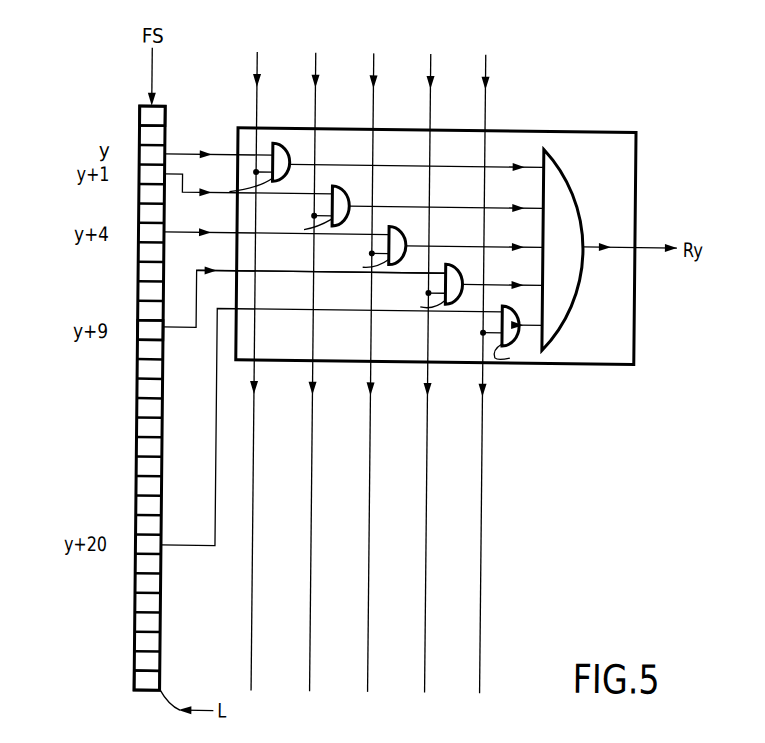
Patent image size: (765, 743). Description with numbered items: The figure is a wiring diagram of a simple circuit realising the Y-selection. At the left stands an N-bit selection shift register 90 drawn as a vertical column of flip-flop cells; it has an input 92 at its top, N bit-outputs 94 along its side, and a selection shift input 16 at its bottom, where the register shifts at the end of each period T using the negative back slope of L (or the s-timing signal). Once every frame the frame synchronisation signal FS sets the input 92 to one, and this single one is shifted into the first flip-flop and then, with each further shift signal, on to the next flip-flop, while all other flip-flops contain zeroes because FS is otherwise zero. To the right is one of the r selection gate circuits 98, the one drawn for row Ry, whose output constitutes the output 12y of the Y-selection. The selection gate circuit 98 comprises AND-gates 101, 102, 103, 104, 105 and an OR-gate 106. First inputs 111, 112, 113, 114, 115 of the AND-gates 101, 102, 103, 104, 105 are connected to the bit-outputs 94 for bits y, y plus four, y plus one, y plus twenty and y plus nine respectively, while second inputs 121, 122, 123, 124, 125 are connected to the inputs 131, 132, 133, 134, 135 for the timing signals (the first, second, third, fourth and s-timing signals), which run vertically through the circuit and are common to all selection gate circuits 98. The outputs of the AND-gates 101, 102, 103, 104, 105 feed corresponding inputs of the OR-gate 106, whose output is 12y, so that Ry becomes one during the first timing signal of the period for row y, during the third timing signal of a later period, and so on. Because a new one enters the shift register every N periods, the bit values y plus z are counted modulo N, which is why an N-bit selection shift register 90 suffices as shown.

The selection shift register 90 is at (137, 582).
The input 92 is at (157, 108).
The selection shift input 16 is at (166, 692).
The bit-outputs 94 is at (166, 332).
The selection gate circuit 98 is at (609, 362).
The AND-gate 101 is at (284, 171).
The AND-gate 102 is at (401, 238).
The AND-gate 103 is at (345, 199).
The AND-gate 104 is at (517, 315).
The AND-gate 105 is at (459, 272).
The OR-gate 106 is at (585, 270).
The first input of AND-gate 111 is at (270, 143).
The first input of AND-gate 112 is at (389, 225).
The first input of AND-gate 113 is at (331, 184).
The first input of AND-gate 114 is at (503, 304).
The first input of AND-gate 115 is at (446, 262).
The second input of AND-gate 121 is at (243, 180).
The second input of AND-gate 122 is at (362, 263).
The second input of AND-gate 123 is at (308, 220).
The second input of AND-gate 124 is at (514, 351).
The second input of AND-gate 125 is at (418, 298).
The timing signal input 131 is at (258, 128).
The timing signal input 132 is at (374, 128).
The timing signal input 133 is at (316, 128).
The timing signal input 134 is at (486, 128).
The timing signal input 135 is at (431, 128).
The output of the Y-selection 12y is at (638, 243).